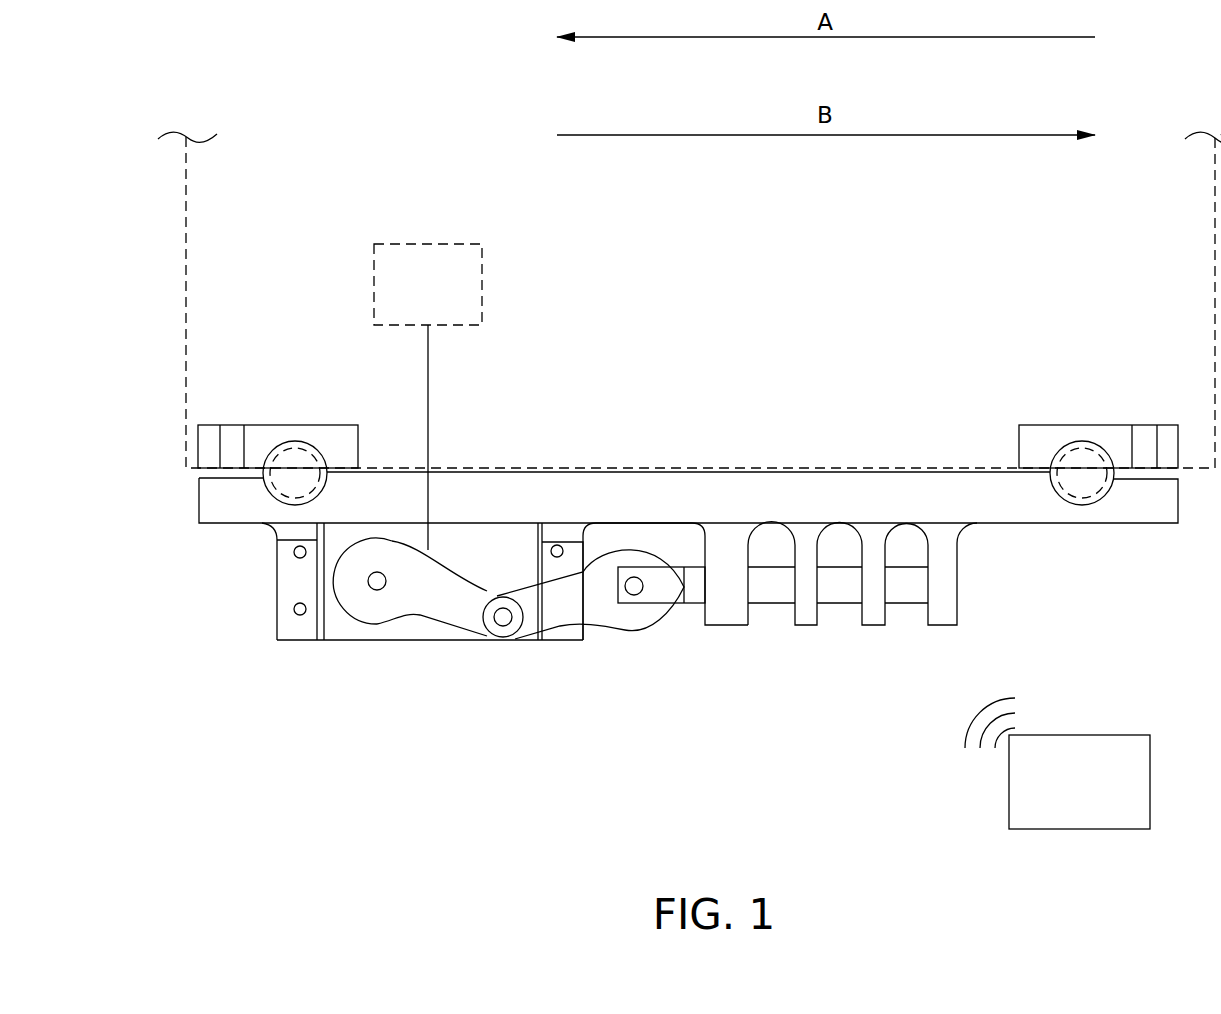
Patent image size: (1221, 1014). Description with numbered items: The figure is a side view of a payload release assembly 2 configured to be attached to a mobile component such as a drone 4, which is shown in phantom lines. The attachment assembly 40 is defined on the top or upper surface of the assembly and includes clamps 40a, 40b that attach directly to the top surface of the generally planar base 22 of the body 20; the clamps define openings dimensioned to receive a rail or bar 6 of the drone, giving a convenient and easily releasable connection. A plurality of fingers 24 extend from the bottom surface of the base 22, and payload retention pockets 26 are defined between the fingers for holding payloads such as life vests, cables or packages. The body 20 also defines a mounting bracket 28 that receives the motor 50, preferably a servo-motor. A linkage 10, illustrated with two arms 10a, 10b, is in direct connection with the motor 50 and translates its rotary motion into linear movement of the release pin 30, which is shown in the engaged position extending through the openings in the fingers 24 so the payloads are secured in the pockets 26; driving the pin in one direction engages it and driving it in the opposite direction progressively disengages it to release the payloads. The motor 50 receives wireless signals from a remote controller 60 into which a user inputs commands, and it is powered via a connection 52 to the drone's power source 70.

The payload release assembly 2 is at (525, 758).
The drone 4 is at (186, 192).
The rail or bar 6 is at (1085, 476).
The linkage 10 is at (448, 598).
The arm 10a is at (472, 615).
The arm 10b is at (573, 600).
The body 20 is at (617, 468).
The base 22 is at (742, 485).
The fingers 24 is at (730, 567).
The payload retention pockets 26 is at (907, 548).
The mounting bracket 28 is at (288, 623).
The release pin 30 is at (777, 583).
The attachment assembly 40 is at (1032, 445).
The clamp 40a is at (232, 440).
The clamp 40b is at (1113, 438).
The motor 50 is at (487, 540).
The connection 52 is at (427, 362).
The remote controller 60 is at (1065, 795).
The power source 70 is at (415, 297).